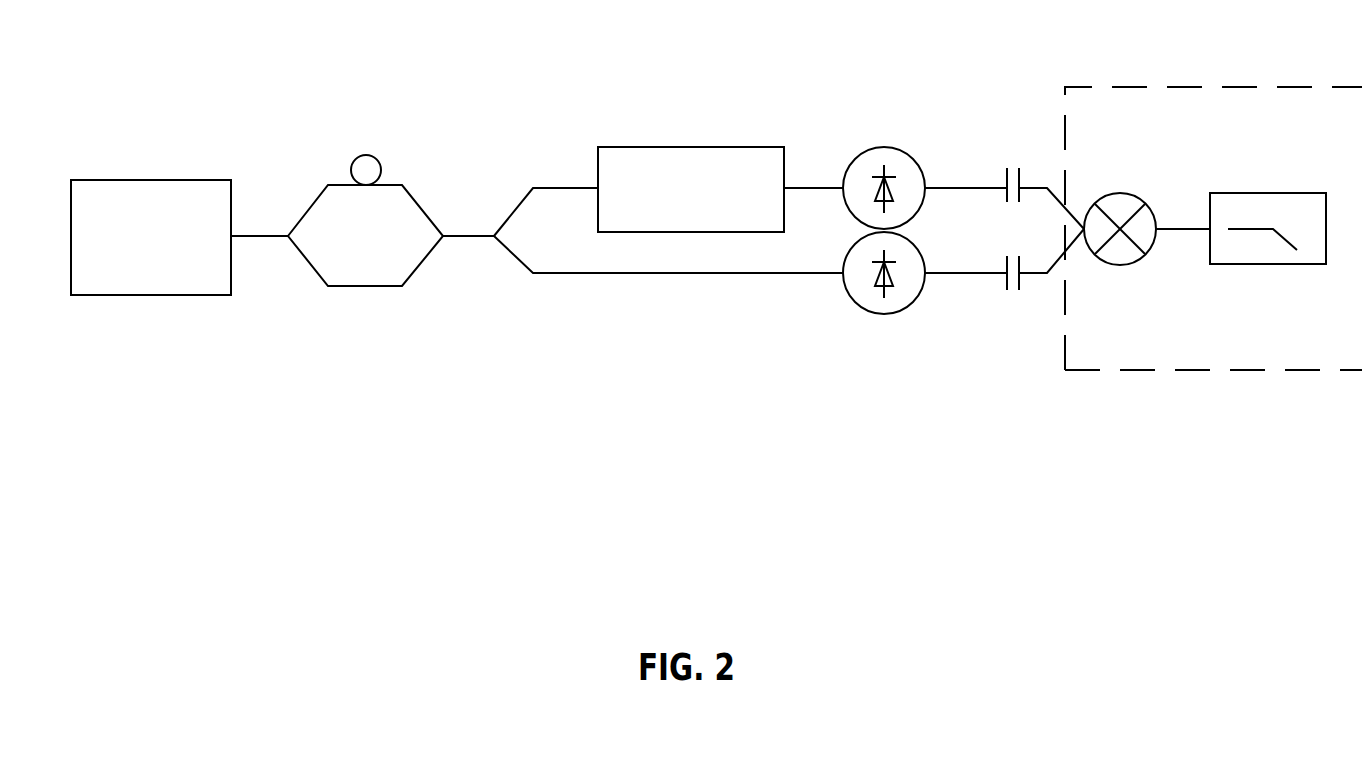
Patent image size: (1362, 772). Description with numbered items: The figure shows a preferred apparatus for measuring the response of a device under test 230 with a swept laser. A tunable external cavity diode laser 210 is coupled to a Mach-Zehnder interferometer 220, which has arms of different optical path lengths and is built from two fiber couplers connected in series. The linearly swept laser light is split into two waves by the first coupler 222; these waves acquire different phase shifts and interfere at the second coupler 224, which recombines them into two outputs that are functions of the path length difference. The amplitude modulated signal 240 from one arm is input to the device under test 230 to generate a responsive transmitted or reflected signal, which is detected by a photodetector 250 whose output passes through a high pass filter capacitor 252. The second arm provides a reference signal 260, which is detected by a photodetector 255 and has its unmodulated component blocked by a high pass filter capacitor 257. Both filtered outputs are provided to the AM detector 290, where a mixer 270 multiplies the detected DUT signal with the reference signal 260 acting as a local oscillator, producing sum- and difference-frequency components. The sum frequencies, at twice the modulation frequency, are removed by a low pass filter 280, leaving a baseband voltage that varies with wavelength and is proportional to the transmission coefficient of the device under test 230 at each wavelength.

The tunable external cavity diode laser 210 is at (151, 237).
The Mach-Zehnder interferometer 220 is at (365, 220).
The first coupler 222 is at (273, 247).
The second coupler 224 is at (447, 247).
The device under test 230 is at (720, 189).
The amplitude modulated signal 240 is at (570, 187).
The reference signal 260 is at (598, 276).
The photodetector 250 is at (892, 147).
The photodetector 255 is at (913, 308).
The high pass filter capacitor 252 is at (1015, 163).
The high pass filter capacitor 257 is at (1013, 300).
The mixer 270 is at (1127, 198).
The low pass filter 280 is at (1310, 192).
The AM detector 290 is at (1160, 86).